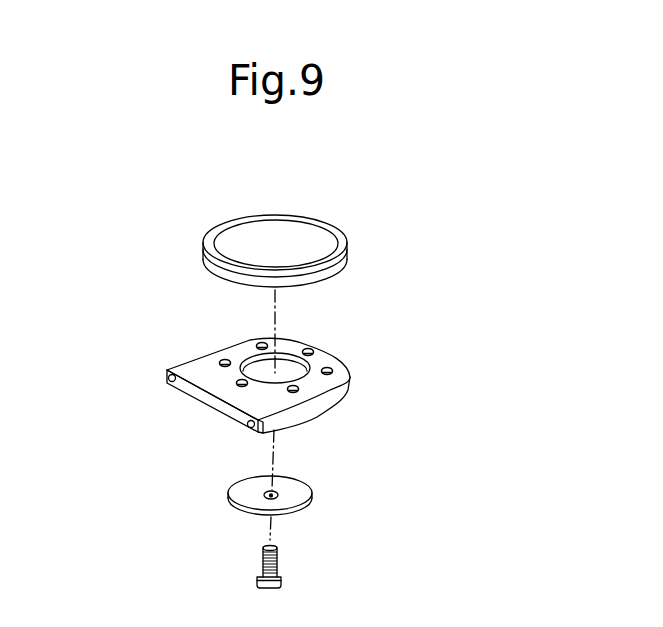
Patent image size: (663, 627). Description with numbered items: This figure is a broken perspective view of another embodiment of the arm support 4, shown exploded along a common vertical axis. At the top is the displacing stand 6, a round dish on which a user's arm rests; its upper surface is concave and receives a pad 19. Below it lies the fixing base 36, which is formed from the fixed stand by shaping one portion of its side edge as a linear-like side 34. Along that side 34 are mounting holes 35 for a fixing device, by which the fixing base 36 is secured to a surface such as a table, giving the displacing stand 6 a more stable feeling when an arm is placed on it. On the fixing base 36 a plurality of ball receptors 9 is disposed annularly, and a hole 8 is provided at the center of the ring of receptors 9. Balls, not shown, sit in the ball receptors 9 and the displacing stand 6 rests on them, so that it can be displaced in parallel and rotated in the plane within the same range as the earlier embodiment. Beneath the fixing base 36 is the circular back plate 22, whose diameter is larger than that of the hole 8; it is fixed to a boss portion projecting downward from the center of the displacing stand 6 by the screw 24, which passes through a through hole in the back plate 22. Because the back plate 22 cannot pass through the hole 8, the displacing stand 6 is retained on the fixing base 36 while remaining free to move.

The arm support 4 is at (183, 283).
The displacing stand 6 is at (347, 243).
The pad 19 is at (288, 240).
The hole 8 is at (293, 370).
The ball receptors 9 is at (323, 362).
The linear-like side 34 is at (190, 363).
The mounting holes 35 is at (246, 425).
The fixing base 36 is at (307, 408).
The back plate 22 is at (292, 500).
The screw 24 is at (278, 558).